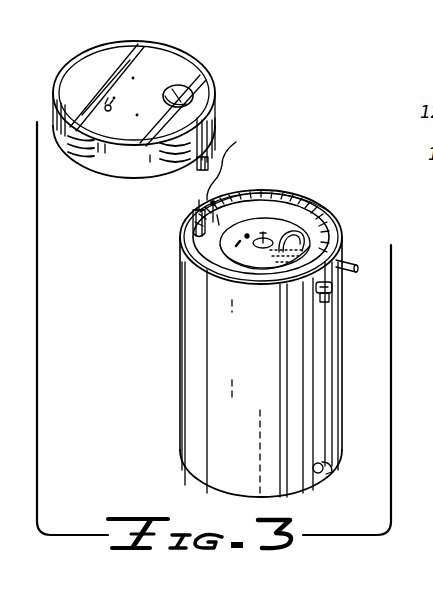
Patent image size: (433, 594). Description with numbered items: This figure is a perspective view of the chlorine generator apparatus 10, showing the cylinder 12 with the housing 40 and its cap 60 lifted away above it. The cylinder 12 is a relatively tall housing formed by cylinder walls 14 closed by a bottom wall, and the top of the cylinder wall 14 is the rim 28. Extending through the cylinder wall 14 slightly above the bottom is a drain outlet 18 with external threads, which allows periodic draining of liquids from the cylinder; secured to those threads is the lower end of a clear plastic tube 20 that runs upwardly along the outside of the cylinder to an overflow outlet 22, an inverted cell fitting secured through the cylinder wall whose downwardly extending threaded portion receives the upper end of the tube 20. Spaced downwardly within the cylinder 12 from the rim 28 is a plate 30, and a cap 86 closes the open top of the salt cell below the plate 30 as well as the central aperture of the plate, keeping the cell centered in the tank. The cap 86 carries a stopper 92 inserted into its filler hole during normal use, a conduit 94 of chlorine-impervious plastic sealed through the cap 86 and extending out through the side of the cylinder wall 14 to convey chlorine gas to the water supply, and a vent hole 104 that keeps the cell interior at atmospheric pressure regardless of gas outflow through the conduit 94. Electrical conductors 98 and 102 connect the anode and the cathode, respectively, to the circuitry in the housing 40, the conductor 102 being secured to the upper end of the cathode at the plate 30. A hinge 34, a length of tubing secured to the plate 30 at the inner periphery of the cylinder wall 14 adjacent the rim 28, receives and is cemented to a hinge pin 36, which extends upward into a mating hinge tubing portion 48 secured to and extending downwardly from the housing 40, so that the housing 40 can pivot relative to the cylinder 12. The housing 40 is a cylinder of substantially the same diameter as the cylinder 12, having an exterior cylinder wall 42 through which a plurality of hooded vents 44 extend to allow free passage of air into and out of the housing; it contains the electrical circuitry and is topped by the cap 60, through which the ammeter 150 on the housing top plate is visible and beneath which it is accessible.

The chlorine generator apparatus 10 is at (136, 390).
The cylinder 12 is at (180, 297).
The cylinder walls 14 is at (180, 372).
The drain outlet 18 is at (316, 473).
The clear plastic tube 20 is at (333, 396).
The overflow outlet 22 is at (334, 287).
The rim 28 is at (336, 213).
The plate 30 is at (240, 241).
The hinge 34 is at (188, 230).
The hinge pin 36 is at (195, 207).
The housing 40 is at (221, 130).
The exterior cylinder wall 42 is at (138, 165).
The hooded vents 44 is at (84, 148).
The mating hinge tubing portion 48 is at (195, 173).
The cap 60 is at (203, 57).
The cap 86 is at (316, 204).
The stopper 92 is at (260, 256).
The conduit 94 is at (354, 264).
The electrical conductor 98 is at (215, 200).
The electrical conductor 102 is at (237, 164).
The vent hole 104 is at (247, 232).
The ammeter 150 is at (193, 90).